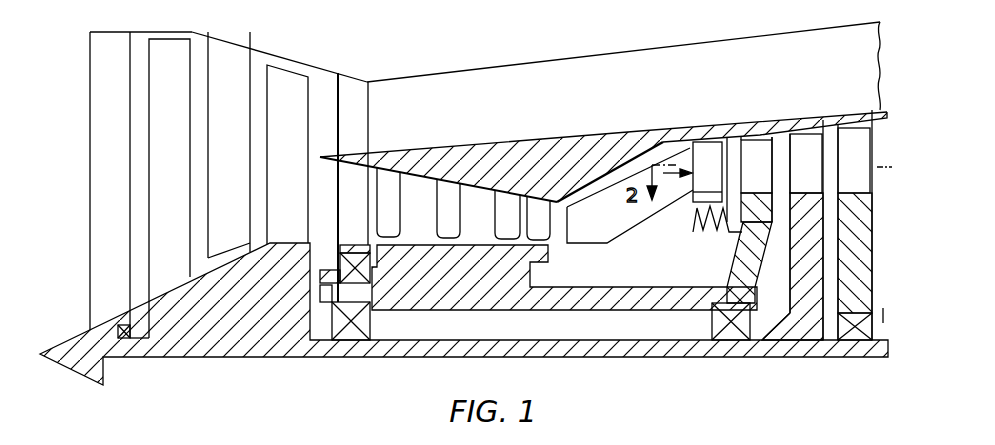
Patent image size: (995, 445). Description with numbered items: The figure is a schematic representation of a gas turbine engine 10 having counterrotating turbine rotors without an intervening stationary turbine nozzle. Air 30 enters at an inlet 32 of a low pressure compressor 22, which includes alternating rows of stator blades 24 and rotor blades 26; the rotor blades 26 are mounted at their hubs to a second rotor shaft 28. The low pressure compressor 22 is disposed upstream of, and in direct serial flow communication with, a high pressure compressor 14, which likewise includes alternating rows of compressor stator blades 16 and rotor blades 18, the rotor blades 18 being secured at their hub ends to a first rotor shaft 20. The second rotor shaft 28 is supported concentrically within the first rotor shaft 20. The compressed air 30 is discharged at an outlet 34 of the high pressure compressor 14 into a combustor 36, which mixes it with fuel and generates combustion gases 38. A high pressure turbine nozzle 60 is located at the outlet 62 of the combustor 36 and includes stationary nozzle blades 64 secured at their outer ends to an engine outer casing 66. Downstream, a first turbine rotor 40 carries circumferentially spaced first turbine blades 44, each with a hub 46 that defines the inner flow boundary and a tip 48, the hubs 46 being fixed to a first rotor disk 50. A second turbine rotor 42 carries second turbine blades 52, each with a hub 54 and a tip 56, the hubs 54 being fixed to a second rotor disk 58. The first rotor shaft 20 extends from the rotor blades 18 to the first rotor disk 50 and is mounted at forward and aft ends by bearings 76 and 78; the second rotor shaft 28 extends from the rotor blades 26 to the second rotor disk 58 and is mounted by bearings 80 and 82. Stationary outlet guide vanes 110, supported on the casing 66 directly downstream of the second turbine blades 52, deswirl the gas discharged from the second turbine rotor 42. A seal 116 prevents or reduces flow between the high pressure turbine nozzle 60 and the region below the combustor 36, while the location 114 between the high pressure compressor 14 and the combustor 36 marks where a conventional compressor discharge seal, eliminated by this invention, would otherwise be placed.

The gas turbine engine 10 is at (462, 66).
The high pressure compressor 14 is at (434, 138).
The compressor stator blades 16 is at (478, 197).
The rotor blades 18 is at (503, 206).
The first rotor shaft 20 is at (425, 311).
The low pressure compressor 22 is at (292, 53).
The stator blades 24 is at (96, 108).
The rotor blades 26 is at (159, 108).
The second rotor shaft 28 is at (527, 340).
The air 30 is at (104, 163).
The inlet 32 is at (82, 33).
The outlet 34 is at (557, 199).
The combustor 36 is at (578, 232).
The combustion gases 38 is at (673, 176).
The first turbine rotor 40 is at (714, 245).
The second turbine rotor 42 is at (803, 360).
The first turbine blades 44 is at (748, 175).
The hub 46 is at (760, 195).
The tip 48 is at (762, 140).
The first rotor disk 50 is at (755, 262).
The second turbine blades 52 is at (797, 175).
The hub 54 is at (822, 183).
The tip 56 is at (816, 134).
The second rotor disk 58 is at (790, 271).
The high pressure turbine nozzle 60 is at (705, 150).
The outlet 62 is at (685, 157).
The nozzle blades 64 is at (698, 175).
The engine outer casing 66 is at (607, 164).
The bearing 76 is at (353, 343).
The bearing 78 is at (710, 322).
The bearing 80 is at (128, 341).
The bearing 82 is at (856, 345).
The outlet guide vanes 110 is at (840, 150).
The compressor discharge seal location 114 is at (555, 272).
The seal 116 is at (692, 208).